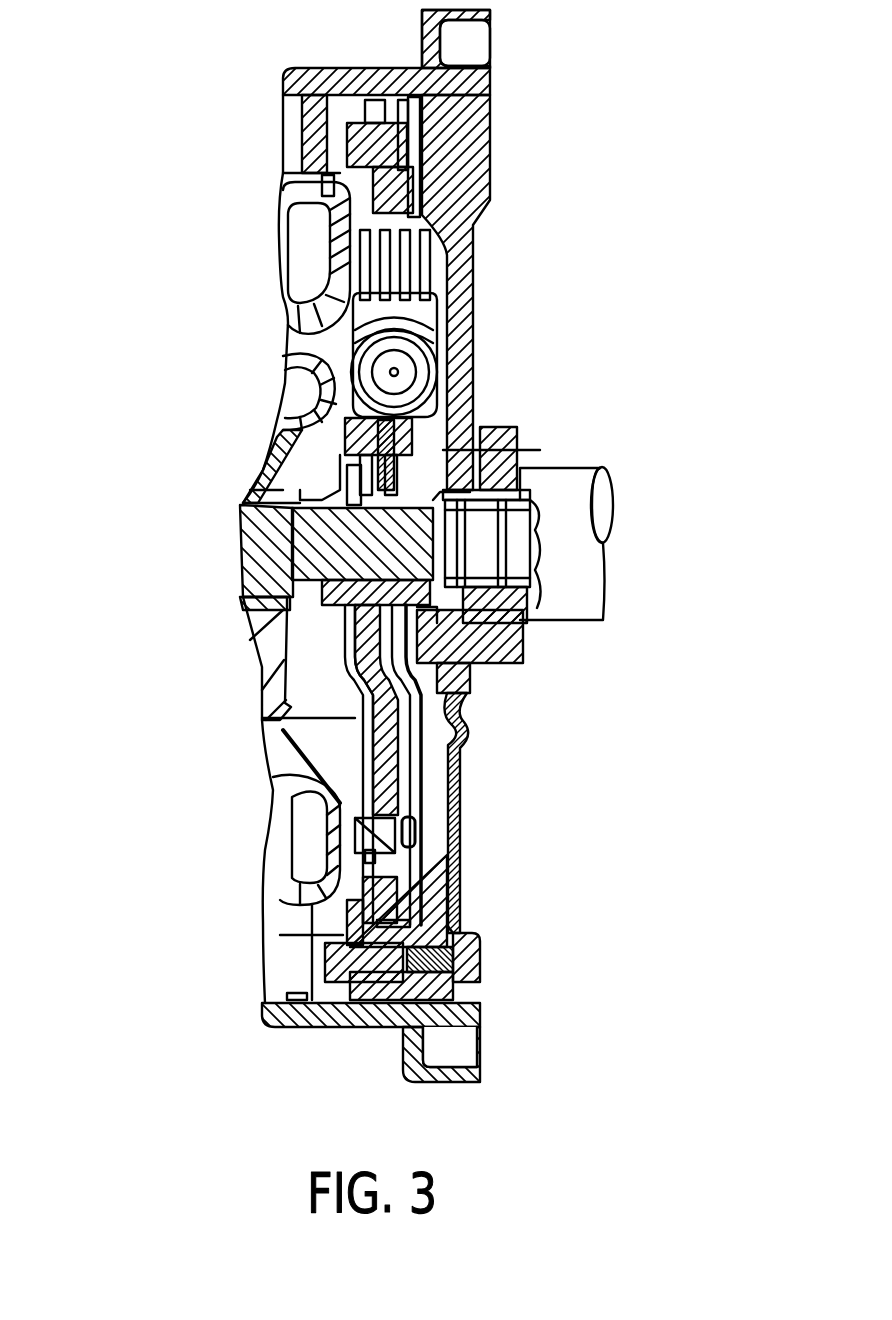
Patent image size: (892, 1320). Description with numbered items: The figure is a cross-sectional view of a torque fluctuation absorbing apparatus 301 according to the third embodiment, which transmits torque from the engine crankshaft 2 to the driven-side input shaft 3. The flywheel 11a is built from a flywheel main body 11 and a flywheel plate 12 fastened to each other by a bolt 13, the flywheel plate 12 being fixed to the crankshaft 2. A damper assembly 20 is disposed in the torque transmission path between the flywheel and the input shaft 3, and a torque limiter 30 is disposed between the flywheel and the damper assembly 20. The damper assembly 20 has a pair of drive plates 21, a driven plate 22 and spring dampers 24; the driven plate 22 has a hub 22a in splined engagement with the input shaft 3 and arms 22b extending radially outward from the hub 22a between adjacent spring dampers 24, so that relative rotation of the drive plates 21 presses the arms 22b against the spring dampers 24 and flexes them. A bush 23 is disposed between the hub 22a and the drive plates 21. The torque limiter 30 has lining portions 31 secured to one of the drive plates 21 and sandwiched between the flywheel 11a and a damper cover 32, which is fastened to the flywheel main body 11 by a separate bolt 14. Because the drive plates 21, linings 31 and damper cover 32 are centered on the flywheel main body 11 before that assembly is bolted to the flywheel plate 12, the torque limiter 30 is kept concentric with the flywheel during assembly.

The torque fluctuation absorbing apparatus 301 is at (513, 102).
The flywheel main body 11 is at (472, 200).
The flywheel 11a is at (476, 921).
The flywheel plate 12 is at (455, 783).
The bolt 13 is at (482, 967).
The bolt 14 is at (335, 948).
The engine crankshaft 2 is at (582, 585).
The driven-side input shaft 3 is at (282, 545).
The damper assembly 20 is at (172, 703).
The drive plates 21 is at (405, 748).
The driven plate 22 is at (193, 372).
The hub 22a is at (330, 492).
The arms 22b is at (348, 450).
The bush 23 is at (415, 460).
The spring dampers 24 is at (352, 365).
The torque limiter 30 is at (170, 827).
The lining portions 31 is at (400, 893).
The damper cover 32 is at (330, 920).